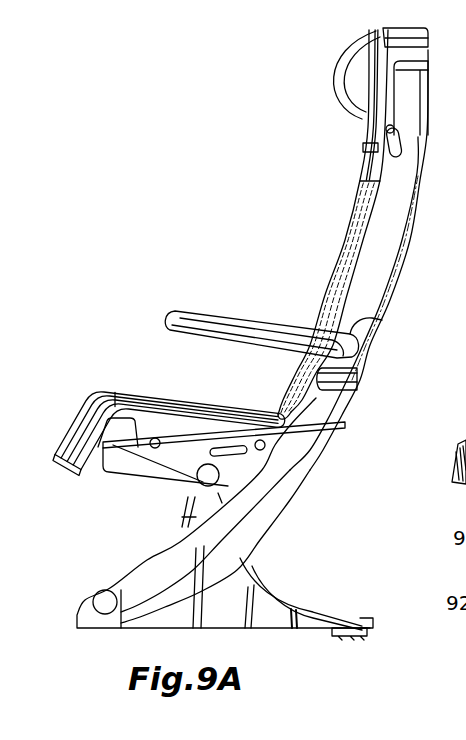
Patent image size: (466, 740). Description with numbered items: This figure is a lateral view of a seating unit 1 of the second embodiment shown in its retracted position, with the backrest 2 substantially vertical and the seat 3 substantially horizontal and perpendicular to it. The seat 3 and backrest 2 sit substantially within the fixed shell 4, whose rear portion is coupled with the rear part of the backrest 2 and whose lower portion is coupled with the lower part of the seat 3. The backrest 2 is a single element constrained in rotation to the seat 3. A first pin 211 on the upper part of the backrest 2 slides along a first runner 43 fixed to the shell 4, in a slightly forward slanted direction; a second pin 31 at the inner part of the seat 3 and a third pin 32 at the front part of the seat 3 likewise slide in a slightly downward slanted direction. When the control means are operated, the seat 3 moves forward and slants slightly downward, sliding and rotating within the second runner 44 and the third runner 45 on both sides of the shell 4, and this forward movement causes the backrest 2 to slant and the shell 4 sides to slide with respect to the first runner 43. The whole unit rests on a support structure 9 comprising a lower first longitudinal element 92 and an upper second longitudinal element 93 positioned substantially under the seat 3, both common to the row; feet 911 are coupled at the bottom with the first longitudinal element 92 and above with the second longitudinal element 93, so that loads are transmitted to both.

The seating unit 1 is at (231, 127).
The backrest 2 is at (347, 249).
The seat 3 is at (128, 393).
The fixed shell 4 is at (382, 307).
The support structure 9 is at (92, 570).
The second pin 31 is at (266, 446).
The third pin 32 is at (158, 449).
The first runner 43 is at (401, 150).
The second runner 44 is at (248, 460).
The third runner 45 is at (117, 474).
The first longitudinal element 92 is at (97, 602).
The second longitudinal element 93 is at (212, 482).
The first pin 211 is at (386, 130).
The feet 911 is at (292, 603).